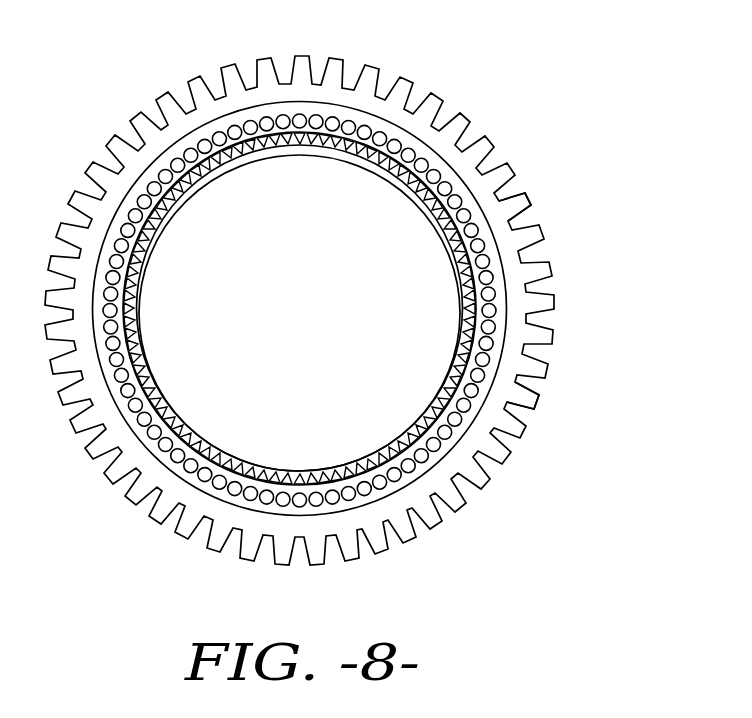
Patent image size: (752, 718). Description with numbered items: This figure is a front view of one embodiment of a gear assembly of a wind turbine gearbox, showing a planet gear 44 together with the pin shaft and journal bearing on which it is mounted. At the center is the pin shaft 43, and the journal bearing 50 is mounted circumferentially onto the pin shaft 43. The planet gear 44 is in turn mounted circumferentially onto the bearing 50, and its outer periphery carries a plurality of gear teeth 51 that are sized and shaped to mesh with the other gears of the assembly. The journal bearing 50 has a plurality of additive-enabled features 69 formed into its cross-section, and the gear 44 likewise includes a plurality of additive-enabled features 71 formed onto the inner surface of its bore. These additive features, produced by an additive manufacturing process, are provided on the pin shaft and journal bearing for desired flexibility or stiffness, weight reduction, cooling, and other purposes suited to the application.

The first pin shaft 43 is at (315, 311).
The planet gear 44 is at (403, 75).
The journal bearing 50 is at (153, 389).
The gear teeth 51 is at (530, 237).
The additive-enabled features 69 is at (338, 480).
The additive-enabled features 71 is at (455, 422).